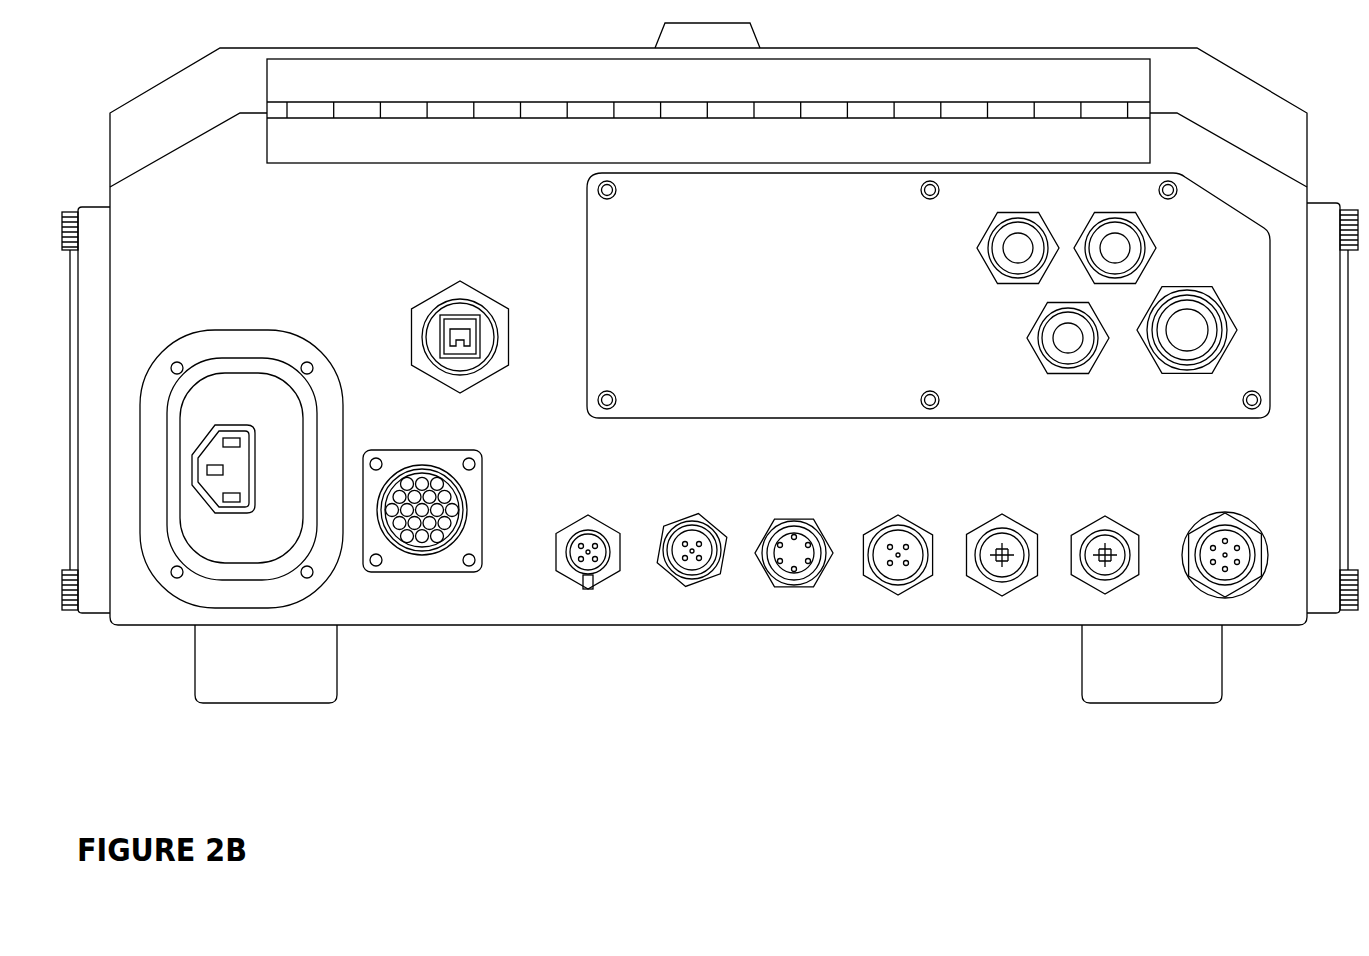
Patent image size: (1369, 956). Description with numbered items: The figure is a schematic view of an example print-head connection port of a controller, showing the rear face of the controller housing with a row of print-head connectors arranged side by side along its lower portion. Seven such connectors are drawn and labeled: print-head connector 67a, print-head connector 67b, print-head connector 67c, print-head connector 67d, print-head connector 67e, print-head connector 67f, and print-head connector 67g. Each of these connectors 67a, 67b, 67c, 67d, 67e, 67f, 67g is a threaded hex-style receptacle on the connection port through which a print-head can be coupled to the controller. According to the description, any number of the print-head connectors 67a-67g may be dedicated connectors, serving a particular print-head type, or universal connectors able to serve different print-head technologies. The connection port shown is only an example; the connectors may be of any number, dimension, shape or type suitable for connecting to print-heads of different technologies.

The print-head connector 67a is at (598, 527).
The print-head connector 67b is at (718, 528).
The print-head connector 67c is at (807, 522).
The print-head connector 67d is at (917, 530).
The print-head connector 67e is at (1018, 537).
The print-head connector 67f is at (1122, 530).
The print-head connector 67g is at (1250, 537).